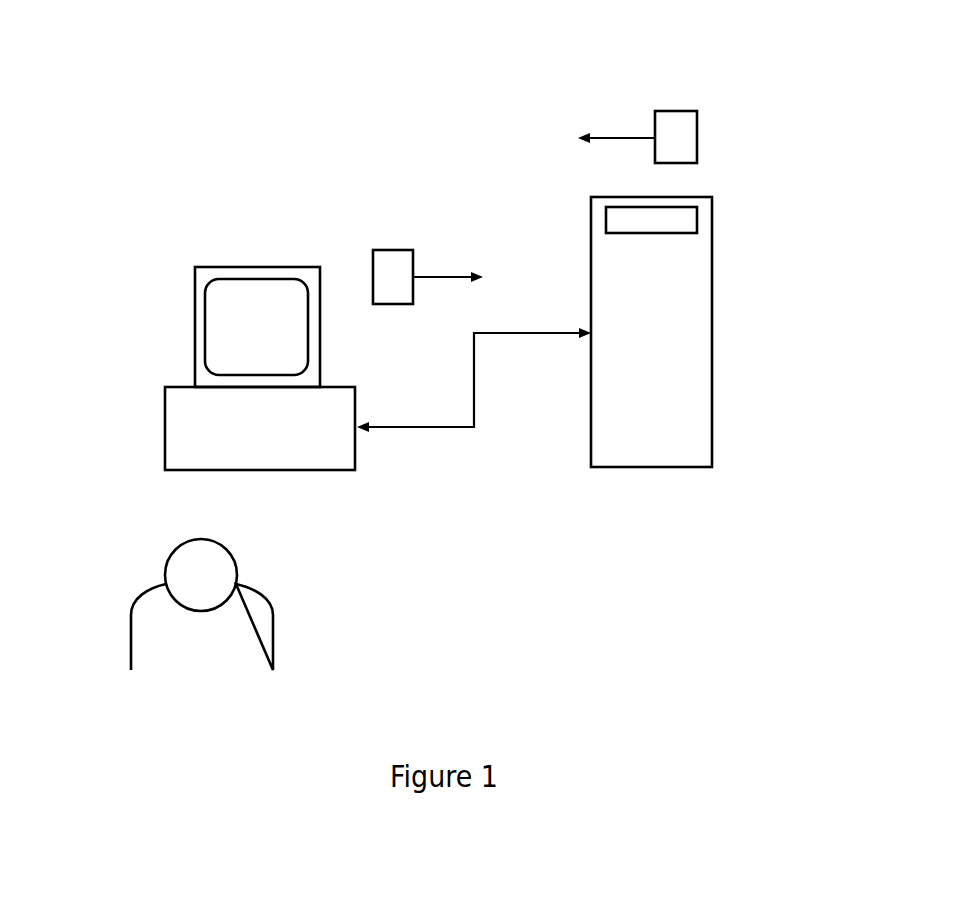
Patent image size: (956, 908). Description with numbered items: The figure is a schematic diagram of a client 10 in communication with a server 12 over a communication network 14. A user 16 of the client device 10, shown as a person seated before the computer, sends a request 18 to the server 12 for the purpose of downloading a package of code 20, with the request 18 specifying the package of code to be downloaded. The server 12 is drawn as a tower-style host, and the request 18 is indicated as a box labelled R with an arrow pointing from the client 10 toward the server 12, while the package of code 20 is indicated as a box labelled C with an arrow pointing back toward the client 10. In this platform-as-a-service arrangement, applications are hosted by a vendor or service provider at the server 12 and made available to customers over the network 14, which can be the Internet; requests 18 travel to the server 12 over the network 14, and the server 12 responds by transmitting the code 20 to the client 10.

The client 10 is at (165, 428).
The server 12 is at (712, 279).
The communication network 14 is at (428, 427).
The user 16 is at (273, 635).
The request 18 is at (395, 250).
The package of code 20 is at (678, 111).